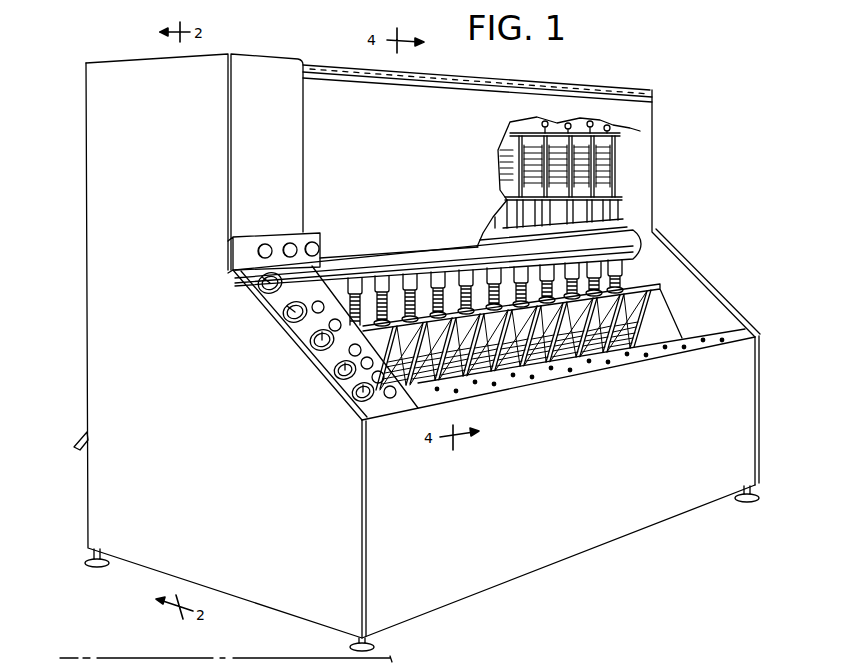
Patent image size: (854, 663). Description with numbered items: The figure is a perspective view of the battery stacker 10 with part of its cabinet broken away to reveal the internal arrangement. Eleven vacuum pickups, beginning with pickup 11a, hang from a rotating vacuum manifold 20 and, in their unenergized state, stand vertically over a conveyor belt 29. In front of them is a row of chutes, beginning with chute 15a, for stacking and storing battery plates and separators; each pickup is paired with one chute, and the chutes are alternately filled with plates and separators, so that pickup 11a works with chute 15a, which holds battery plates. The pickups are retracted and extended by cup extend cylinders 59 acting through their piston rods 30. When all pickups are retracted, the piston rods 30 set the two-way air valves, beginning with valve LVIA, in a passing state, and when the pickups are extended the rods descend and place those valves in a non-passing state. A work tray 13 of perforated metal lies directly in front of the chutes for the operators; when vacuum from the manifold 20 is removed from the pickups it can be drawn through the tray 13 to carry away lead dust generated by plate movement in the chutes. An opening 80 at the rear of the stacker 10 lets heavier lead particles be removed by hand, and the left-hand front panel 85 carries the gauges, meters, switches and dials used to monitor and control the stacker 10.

The battery stacker 10 is at (523, 582).
The opening 80 is at (84, 440).
The left-hand front panel 85 is at (338, 396).
The rotating vacuum manifold 20 is at (623, 240).
The vacuum pickup 11a is at (373, 316).
The conveyor belt 29 is at (628, 297).
The work tray 13 is at (716, 336).
The chute 15a is at (557, 364).
The piston rod 30 is at (618, 168).
The two-way air valve LVIA is at (610, 72).
The cup extend cylinder 59 is at (620, 210).